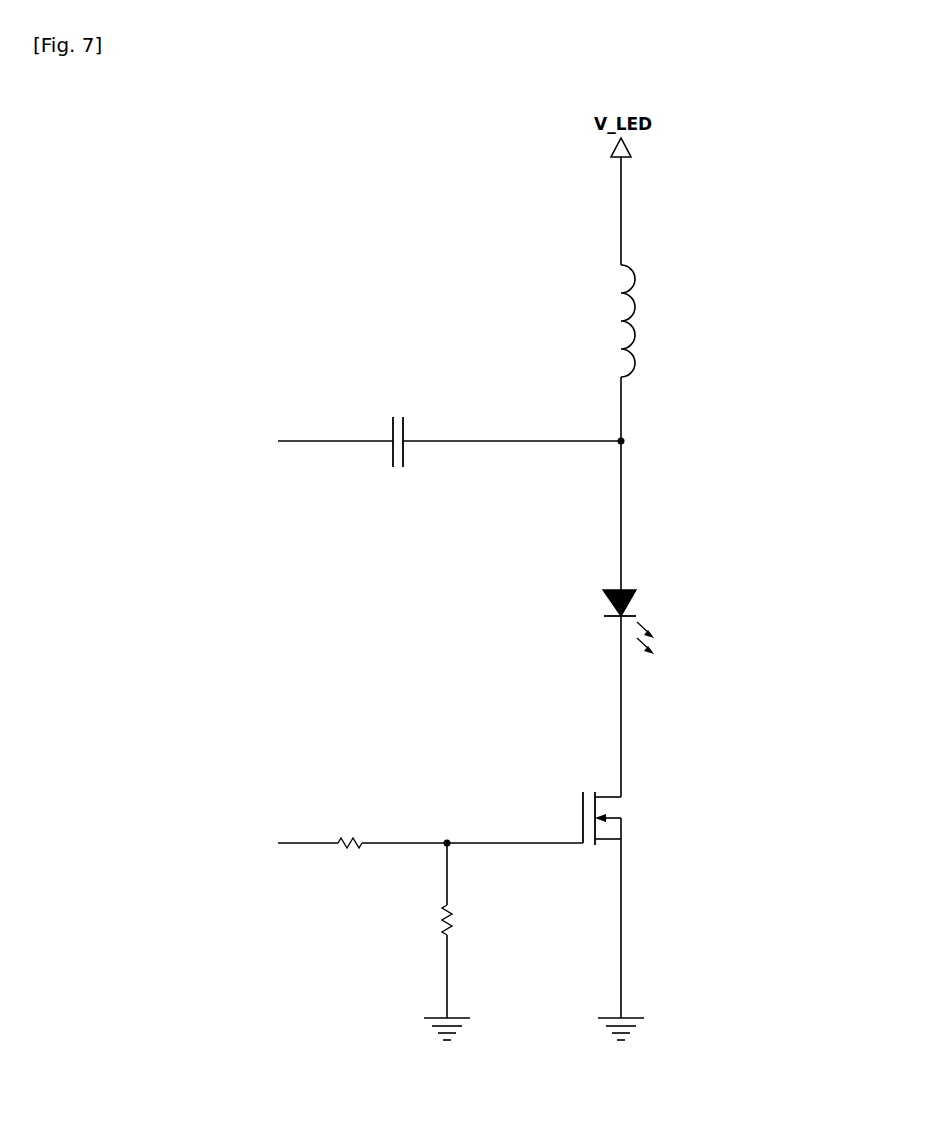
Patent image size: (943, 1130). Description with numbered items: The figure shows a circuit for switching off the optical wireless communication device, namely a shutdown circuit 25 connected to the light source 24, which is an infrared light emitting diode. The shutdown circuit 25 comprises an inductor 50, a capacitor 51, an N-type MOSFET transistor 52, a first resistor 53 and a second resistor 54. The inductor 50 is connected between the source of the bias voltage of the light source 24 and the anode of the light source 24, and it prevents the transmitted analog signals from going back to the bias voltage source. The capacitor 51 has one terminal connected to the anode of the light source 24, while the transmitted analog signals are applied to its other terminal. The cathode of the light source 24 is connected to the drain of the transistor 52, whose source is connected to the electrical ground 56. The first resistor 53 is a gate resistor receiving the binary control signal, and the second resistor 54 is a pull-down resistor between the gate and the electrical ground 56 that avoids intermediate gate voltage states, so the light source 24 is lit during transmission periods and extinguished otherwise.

The light source 24 is at (637, 597).
The shutdown circuit 25 is at (714, 452).
The inductor 50 is at (635, 280).
The capacitor 51 is at (405, 458).
The N-type MOSFET transistor 52 is at (652, 838).
The first resistor 53 is at (343, 850).
The second resistor 54 is at (440, 912).
The electrical ground 56 is at (460, 1016).